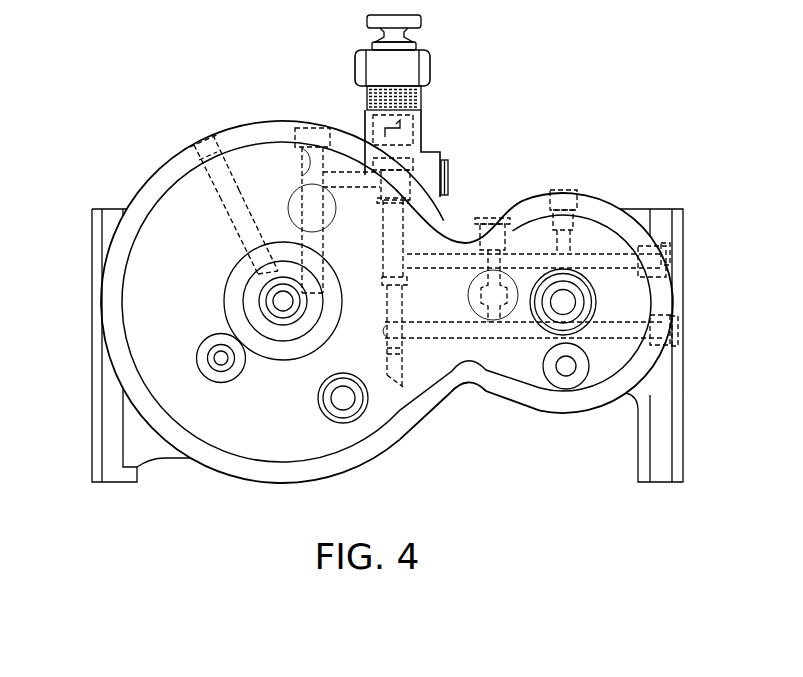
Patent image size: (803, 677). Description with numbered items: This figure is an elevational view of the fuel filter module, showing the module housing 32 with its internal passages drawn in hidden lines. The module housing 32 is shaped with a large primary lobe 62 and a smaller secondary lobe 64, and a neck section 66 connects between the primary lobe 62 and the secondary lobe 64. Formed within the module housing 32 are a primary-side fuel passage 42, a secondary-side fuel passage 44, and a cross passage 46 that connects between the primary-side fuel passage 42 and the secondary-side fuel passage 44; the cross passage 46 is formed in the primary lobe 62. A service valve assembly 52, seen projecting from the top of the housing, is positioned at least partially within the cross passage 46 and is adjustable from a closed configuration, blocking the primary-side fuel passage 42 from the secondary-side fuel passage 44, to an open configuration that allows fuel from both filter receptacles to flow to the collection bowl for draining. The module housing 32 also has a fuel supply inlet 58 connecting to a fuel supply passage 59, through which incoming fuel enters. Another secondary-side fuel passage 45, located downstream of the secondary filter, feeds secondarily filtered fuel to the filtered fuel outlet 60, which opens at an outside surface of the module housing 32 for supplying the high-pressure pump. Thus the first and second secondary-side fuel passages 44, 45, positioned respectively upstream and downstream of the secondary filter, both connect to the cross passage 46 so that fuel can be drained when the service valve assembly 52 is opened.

The module housing 32 is at (97, 333).
The primary-side fuel passage 42 is at (302, 143).
The secondary-side fuel passage 44 is at (453, 328).
The secondary-side fuel passage 45 is at (446, 221).
The cross passage 46 is at (380, 233).
The service valve assembly 52 is at (437, 45).
The fuel supply inlet 58 is at (213, 133).
The fuel supply passage 59 is at (228, 190).
The filtered fuel outlet 60 is at (567, 192).
The primary lobe 62 is at (233, 470).
The secondary lobe 64 is at (556, 410).
The neck section 66 is at (445, 198).